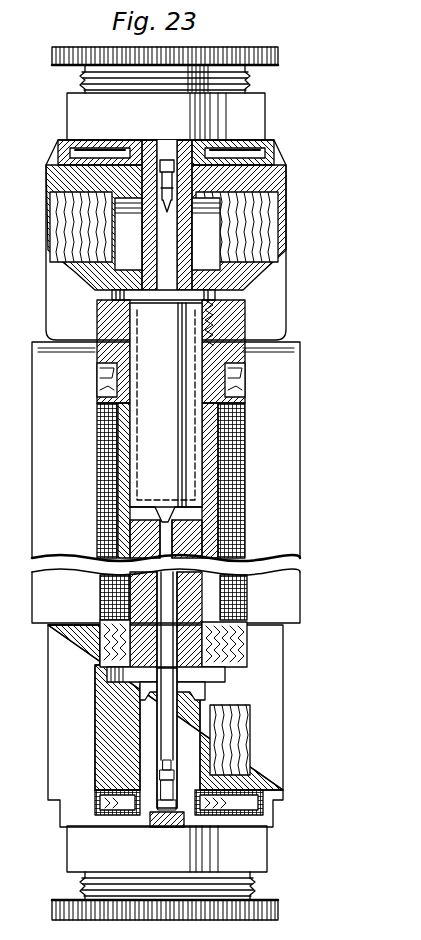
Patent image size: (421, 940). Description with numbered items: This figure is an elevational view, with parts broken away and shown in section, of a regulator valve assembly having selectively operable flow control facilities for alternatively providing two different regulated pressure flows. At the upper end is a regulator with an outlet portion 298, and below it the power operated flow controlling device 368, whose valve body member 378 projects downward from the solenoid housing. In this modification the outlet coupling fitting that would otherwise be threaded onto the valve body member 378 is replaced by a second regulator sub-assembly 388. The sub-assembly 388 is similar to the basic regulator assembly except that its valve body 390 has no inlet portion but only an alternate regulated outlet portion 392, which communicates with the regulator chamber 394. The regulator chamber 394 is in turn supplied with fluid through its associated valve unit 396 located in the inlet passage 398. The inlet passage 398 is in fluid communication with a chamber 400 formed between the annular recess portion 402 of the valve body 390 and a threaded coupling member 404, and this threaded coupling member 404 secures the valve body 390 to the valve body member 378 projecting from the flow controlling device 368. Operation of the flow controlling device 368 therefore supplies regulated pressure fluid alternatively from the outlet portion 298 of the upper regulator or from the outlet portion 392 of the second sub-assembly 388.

The outlet portion 298 is at (252, 222).
The flow controlling device 368 is at (278, 515).
The valve body member 378 is at (190, 602).
The second regulator sub-assembly 388 is at (47, 815).
The valve body 390 is at (165, 726).
The alternate regulated outlet portion 392 is at (263, 752).
The regulator chamber 394 is at (248, 800).
The valve unit 396 is at (170, 814).
The inlet passage 398 is at (160, 753).
The chamber 400 is at (233, 684).
The annular recess portion 402 is at (207, 690).
The threaded coupling member 404 is at (237, 653).